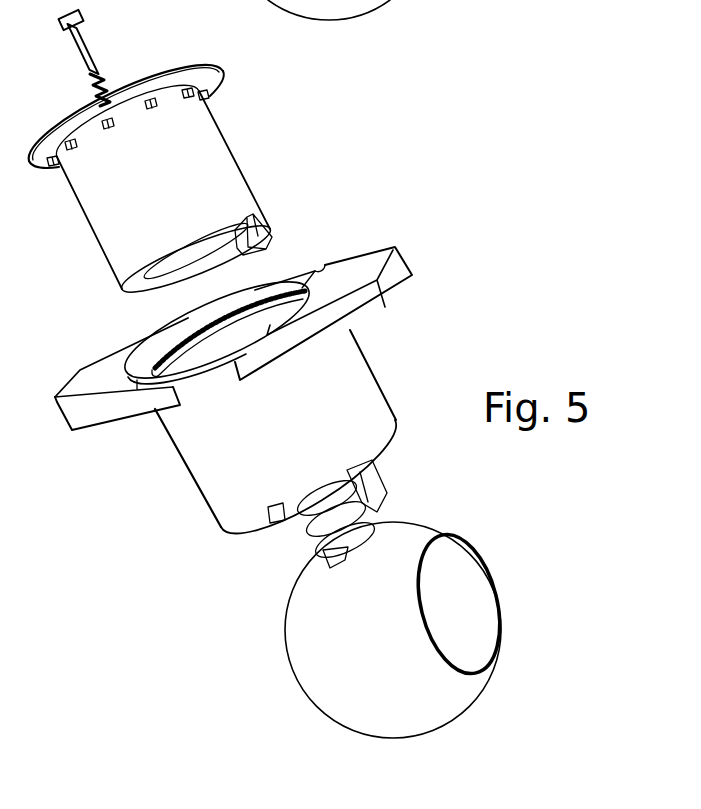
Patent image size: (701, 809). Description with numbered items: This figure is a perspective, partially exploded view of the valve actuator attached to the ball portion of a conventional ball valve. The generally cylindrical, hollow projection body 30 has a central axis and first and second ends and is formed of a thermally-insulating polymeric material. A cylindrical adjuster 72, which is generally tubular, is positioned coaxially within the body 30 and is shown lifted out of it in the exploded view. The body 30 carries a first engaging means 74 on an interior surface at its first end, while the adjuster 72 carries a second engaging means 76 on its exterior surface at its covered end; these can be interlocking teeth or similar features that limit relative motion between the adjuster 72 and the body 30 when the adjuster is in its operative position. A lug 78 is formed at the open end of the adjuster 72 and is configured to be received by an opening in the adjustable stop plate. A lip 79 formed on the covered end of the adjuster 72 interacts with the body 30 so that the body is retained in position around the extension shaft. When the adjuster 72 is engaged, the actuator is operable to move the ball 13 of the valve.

The lip 79 is at (222, 70).
The second engaging means 76 is at (207, 95).
The cylindrical adjuster 72 is at (225, 175).
The lug 78 is at (263, 228).
The projection body 30 is at (223, 492).
The first engaging means 74 is at (226, 310).
The ball 13 is at (438, 703).